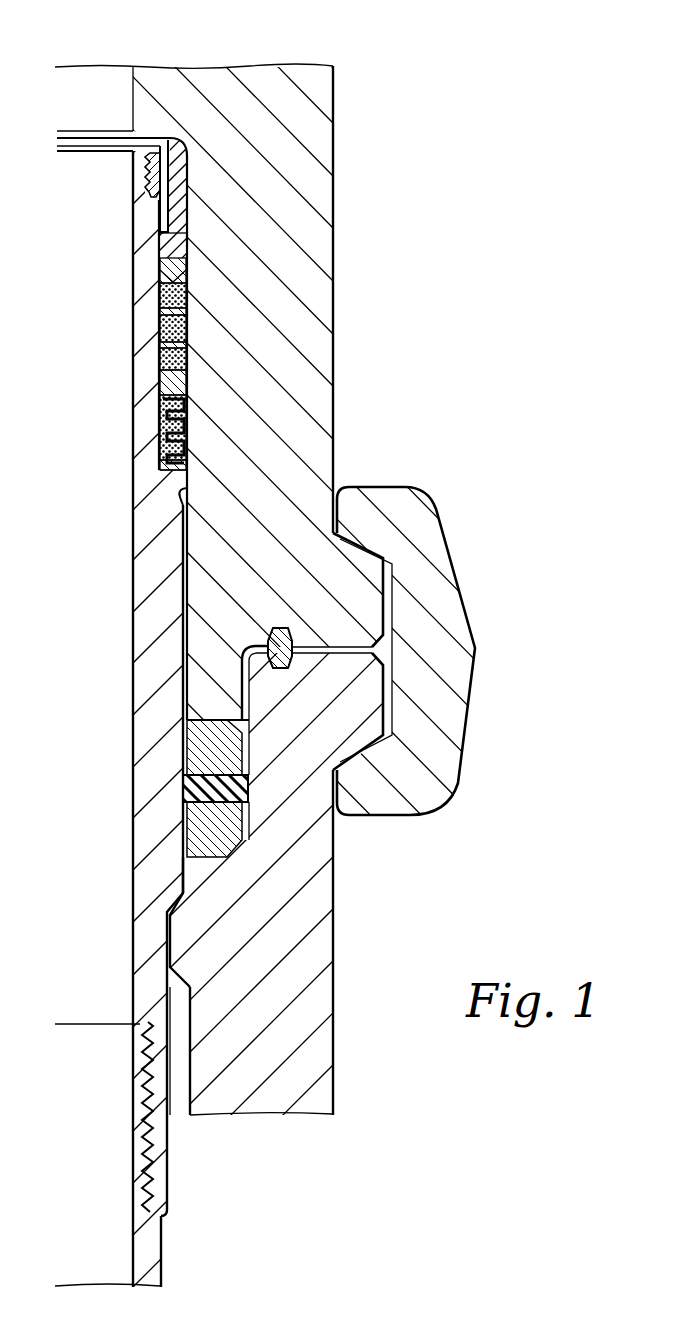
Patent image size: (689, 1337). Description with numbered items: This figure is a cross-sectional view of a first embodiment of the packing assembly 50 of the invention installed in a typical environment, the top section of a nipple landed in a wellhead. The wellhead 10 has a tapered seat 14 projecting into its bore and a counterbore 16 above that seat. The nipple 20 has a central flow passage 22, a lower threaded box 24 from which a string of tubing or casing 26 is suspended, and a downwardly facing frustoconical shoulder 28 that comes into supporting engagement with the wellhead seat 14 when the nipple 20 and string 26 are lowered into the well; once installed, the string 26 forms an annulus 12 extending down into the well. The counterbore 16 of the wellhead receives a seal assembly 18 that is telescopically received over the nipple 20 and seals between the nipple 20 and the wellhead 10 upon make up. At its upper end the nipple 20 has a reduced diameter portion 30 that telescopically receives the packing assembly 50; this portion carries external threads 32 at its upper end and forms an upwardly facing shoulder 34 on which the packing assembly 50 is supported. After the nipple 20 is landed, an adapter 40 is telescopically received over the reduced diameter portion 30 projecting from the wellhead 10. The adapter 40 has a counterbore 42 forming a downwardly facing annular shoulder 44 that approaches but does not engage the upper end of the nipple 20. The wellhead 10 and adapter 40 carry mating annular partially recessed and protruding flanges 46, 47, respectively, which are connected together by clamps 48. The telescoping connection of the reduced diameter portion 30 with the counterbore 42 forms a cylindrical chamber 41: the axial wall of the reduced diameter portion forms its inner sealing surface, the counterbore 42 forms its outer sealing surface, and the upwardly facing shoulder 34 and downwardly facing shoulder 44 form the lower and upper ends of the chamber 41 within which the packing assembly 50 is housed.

The wellhead 10 is at (338, 965).
The annulus 12 is at (182, 1098).
The tapered seat 14 is at (190, 887).
The counterbore 16 is at (238, 843).
The seal assembly 18 is at (181, 789).
The nipple 20 is at (158, 567).
The central flow passage 22 is at (52, 634).
The lower threaded box 24 is at (156, 1185).
The string of tubing or casing 26 is at (161, 1253).
The downwardly facing frustoconical shoulder 28 is at (167, 938).
The reduced diameter portion 30 is at (142, 256).
The external threads 32 is at (147, 183).
The upwardly facing shoulder 34 is at (172, 468).
The adapter 40 is at (338, 313).
The cylindrical chamber 41 is at (163, 219).
The counterbore 42 is at (187, 486).
The downwardly facing annular shoulder 44 is at (143, 130).
The flange 46 is at (392, 690).
The flange 47 is at (392, 607).
The clamps 48 is at (440, 527).
The packing assembly 50 is at (156, 383).